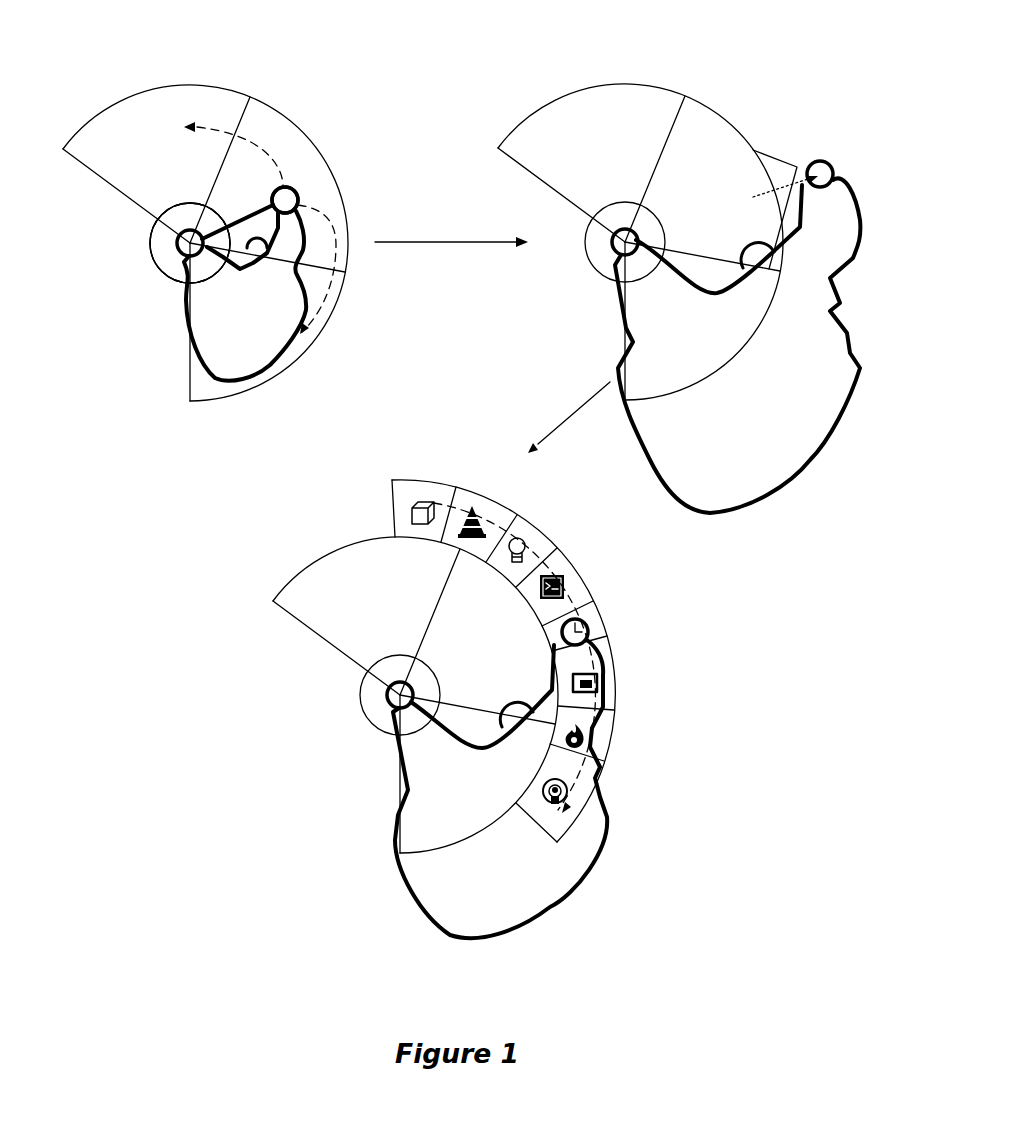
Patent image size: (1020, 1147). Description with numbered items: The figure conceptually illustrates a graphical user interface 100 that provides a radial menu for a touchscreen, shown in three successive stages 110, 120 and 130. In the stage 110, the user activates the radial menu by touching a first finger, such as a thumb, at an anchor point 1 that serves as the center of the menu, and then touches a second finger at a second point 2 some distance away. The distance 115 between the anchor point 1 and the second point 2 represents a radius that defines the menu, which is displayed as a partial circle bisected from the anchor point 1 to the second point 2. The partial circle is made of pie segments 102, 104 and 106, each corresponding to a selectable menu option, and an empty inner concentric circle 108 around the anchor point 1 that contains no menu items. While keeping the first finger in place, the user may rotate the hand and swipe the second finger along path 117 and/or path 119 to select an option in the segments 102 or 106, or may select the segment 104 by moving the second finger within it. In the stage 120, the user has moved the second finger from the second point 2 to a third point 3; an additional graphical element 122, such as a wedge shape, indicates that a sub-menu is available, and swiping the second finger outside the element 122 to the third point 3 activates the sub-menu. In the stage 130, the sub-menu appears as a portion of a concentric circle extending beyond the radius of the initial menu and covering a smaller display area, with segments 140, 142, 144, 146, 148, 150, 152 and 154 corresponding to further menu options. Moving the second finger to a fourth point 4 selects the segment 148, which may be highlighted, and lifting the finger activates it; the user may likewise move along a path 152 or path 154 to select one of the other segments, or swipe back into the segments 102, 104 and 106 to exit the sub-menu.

The anchor point 1 is at (152, 233).
The second point 2 is at (283, 181).
The third point 3 is at (819, 166).
The fourth point 4 is at (589, 632).
The graphical user interface 100 is at (150, 352).
The pie segment 102 is at (76, 151).
The pie segment 104 is at (254, 136).
The pie segment 106 is at (309, 294).
The empty inner concentric circle 108 is at (177, 224).
The stage 110 is at (122, 57).
The distance 115 is at (211, 208).
The path 117 is at (288, 178).
The path 119 is at (333, 217).
The stage 120 is at (522, 55).
The additional graphical element 122 is at (772, 156).
The stage 130 is at (275, 522).
The segment 140 is at (413, 482).
The segment 142 is at (481, 491).
The segment 144 is at (544, 531).
The segment 146 is at (574, 560).
The segment 148 is at (604, 607).
The segment 150 is at (620, 686).
The segment 152 is at (512, 532).
The segment 154 is at (595, 737).